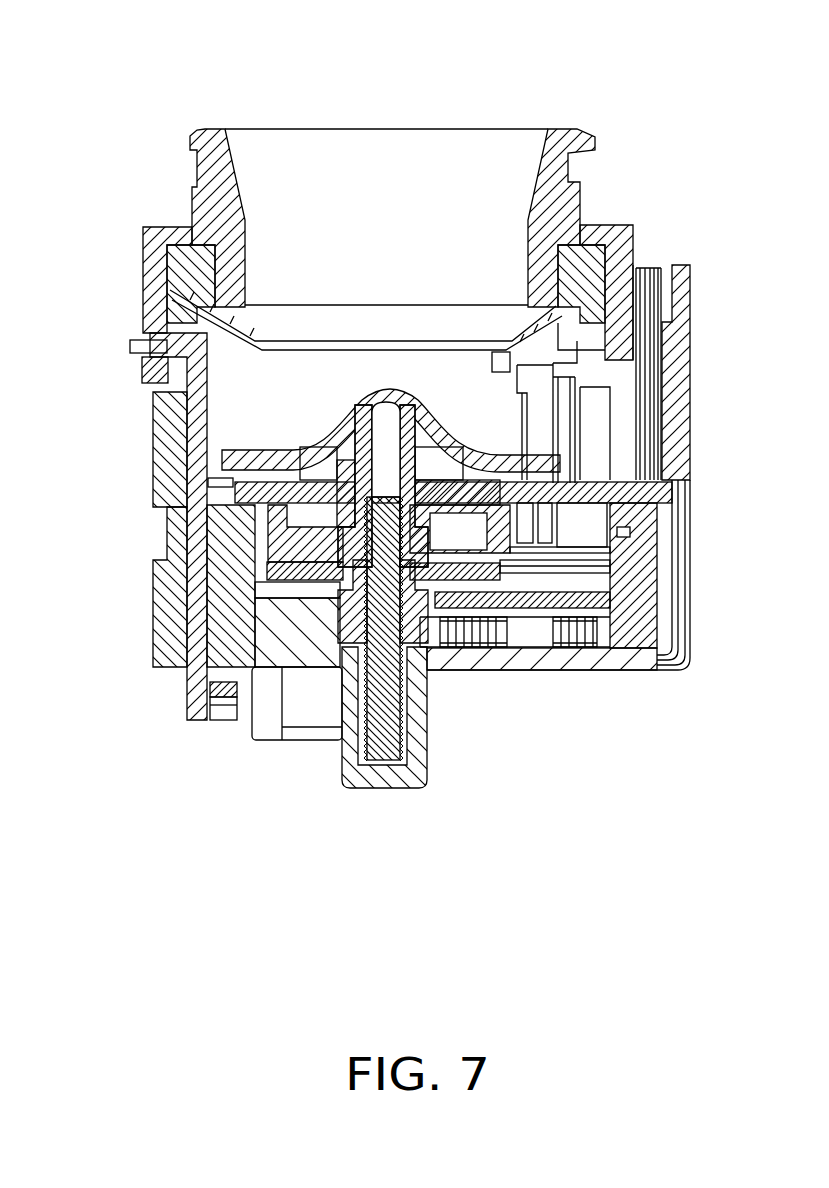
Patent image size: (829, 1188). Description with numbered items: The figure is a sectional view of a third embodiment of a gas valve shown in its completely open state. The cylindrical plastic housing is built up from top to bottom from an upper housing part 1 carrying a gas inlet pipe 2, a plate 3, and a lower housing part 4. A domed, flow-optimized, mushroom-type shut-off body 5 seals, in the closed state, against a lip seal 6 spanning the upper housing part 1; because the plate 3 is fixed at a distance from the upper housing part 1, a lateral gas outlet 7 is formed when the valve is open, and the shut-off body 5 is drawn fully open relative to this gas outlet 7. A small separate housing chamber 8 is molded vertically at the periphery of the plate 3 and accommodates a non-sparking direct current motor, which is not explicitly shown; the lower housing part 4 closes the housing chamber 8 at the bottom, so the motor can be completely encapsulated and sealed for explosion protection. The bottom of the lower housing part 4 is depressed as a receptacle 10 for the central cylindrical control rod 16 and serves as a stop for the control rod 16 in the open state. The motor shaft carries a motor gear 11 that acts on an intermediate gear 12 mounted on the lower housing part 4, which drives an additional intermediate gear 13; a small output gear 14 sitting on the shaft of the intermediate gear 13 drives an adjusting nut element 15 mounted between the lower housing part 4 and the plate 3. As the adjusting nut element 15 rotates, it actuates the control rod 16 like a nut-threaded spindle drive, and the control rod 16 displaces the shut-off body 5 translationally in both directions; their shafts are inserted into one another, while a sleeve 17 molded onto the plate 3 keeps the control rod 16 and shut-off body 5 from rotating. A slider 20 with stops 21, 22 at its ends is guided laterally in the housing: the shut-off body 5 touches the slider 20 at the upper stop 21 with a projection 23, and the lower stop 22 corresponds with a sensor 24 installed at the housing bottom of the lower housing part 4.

The upper housing part 1 is at (140, 228).
The gas inlet pipe 2 is at (476, 147).
The plate 3 is at (620, 483).
The lower housing part 4 is at (593, 658).
The shut-off body 5 is at (463, 440).
The lip seal 6 is at (262, 318).
The lateral gas outlet 7 is at (252, 400).
The housing chamber 8 is at (685, 313).
The receptacle 10 is at (380, 786).
The motor gear 11 is at (610, 622).
The intermediate gear 12 is at (465, 637).
The intermediate gear 13 is at (568, 610).
The output gear 14 is at (545, 578).
The adjusting nut element 15 is at (267, 575).
The control rod 16 is at (380, 712).
The sleeve 17 is at (447, 490).
The slider 20 is at (202, 468).
The upper stop 21 is at (193, 360).
The lower stop 22 is at (226, 712).
The projection 23 is at (220, 488).
The sensor 24 is at (227, 685).